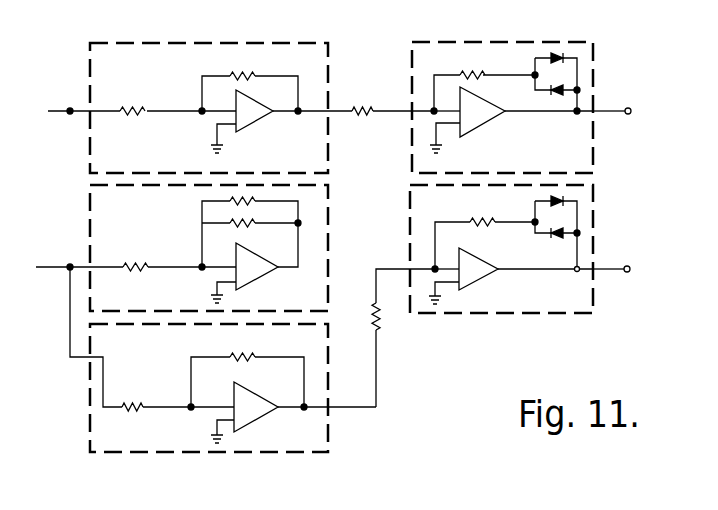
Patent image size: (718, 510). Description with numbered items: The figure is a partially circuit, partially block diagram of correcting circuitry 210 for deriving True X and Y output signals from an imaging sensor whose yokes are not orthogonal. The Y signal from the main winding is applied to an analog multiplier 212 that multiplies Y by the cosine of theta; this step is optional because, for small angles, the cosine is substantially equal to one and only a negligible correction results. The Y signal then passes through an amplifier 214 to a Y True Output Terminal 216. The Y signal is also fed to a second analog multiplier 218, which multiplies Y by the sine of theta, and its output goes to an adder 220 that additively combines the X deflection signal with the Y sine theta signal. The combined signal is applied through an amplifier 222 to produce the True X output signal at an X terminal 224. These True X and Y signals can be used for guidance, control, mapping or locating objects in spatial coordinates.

The correcting circuitry 210 is at (380, 66).
The analog multiplier 212 is at (325, 427).
The amplifier 214 is at (472, 308).
The Y True Output Terminal 216 is at (630, 272).
The second analog multiplier 218 is at (323, 233).
The adder 220 is at (92, 73).
The amplifier 222 is at (590, 73).
The X terminal 224 is at (630, 115).